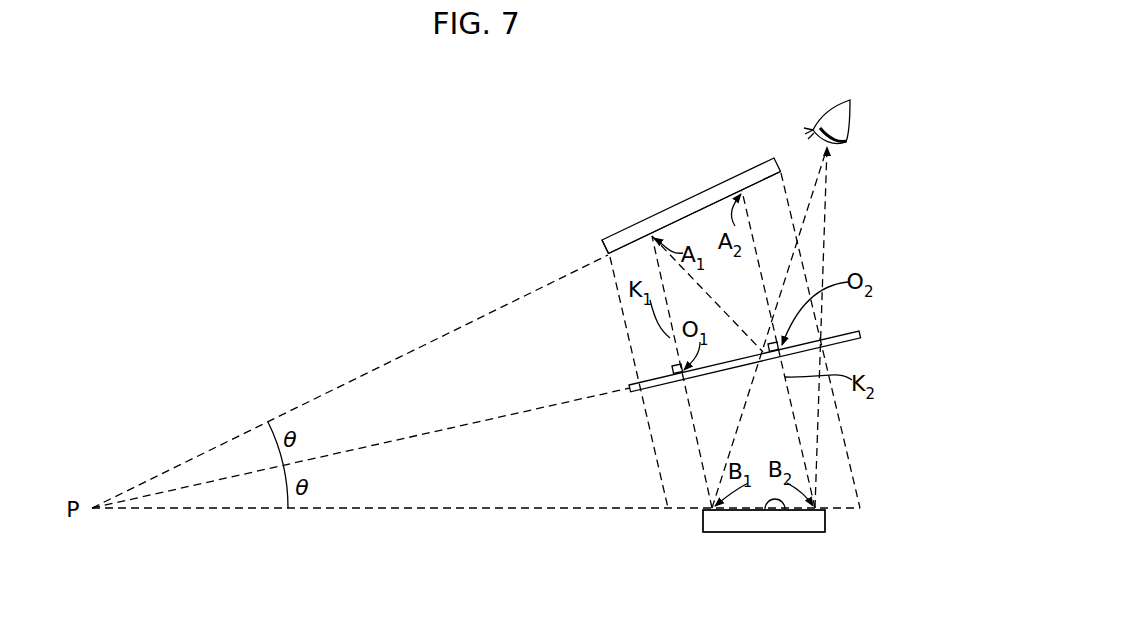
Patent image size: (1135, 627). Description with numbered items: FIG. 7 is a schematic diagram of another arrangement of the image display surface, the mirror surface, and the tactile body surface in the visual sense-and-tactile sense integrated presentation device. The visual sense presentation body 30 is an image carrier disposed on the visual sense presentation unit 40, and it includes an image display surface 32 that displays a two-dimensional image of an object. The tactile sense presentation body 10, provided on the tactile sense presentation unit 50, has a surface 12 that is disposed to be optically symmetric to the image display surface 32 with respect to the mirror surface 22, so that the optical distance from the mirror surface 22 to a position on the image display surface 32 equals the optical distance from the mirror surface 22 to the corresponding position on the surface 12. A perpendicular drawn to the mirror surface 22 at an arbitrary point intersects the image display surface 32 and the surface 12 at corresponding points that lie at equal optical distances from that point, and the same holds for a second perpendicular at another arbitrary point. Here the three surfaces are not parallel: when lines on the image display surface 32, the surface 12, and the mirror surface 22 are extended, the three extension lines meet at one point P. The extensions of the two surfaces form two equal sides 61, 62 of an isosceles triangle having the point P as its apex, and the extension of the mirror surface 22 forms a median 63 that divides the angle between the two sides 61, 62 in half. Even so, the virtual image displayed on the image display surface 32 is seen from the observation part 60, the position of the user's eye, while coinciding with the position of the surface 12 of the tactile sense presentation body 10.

The tactile sense presentation body 10 is at (825, 520).
The surface of the tactile sense presentation body 12 is at (783, 509).
The mirror surface 22 is at (853, 330).
The visual sense presentation body 30 is at (744, 172).
The image display surface 32 is at (767, 178).
The visual sense presentation unit 40 is at (598, 226).
The tactile sense presentation unit 50 is at (700, 542).
The observation part 60 is at (863, 113).
The side of isosceles triangle 61 is at (467, 511).
The side of isosceles triangle 62 is at (453, 330).
The median 63 is at (490, 416).